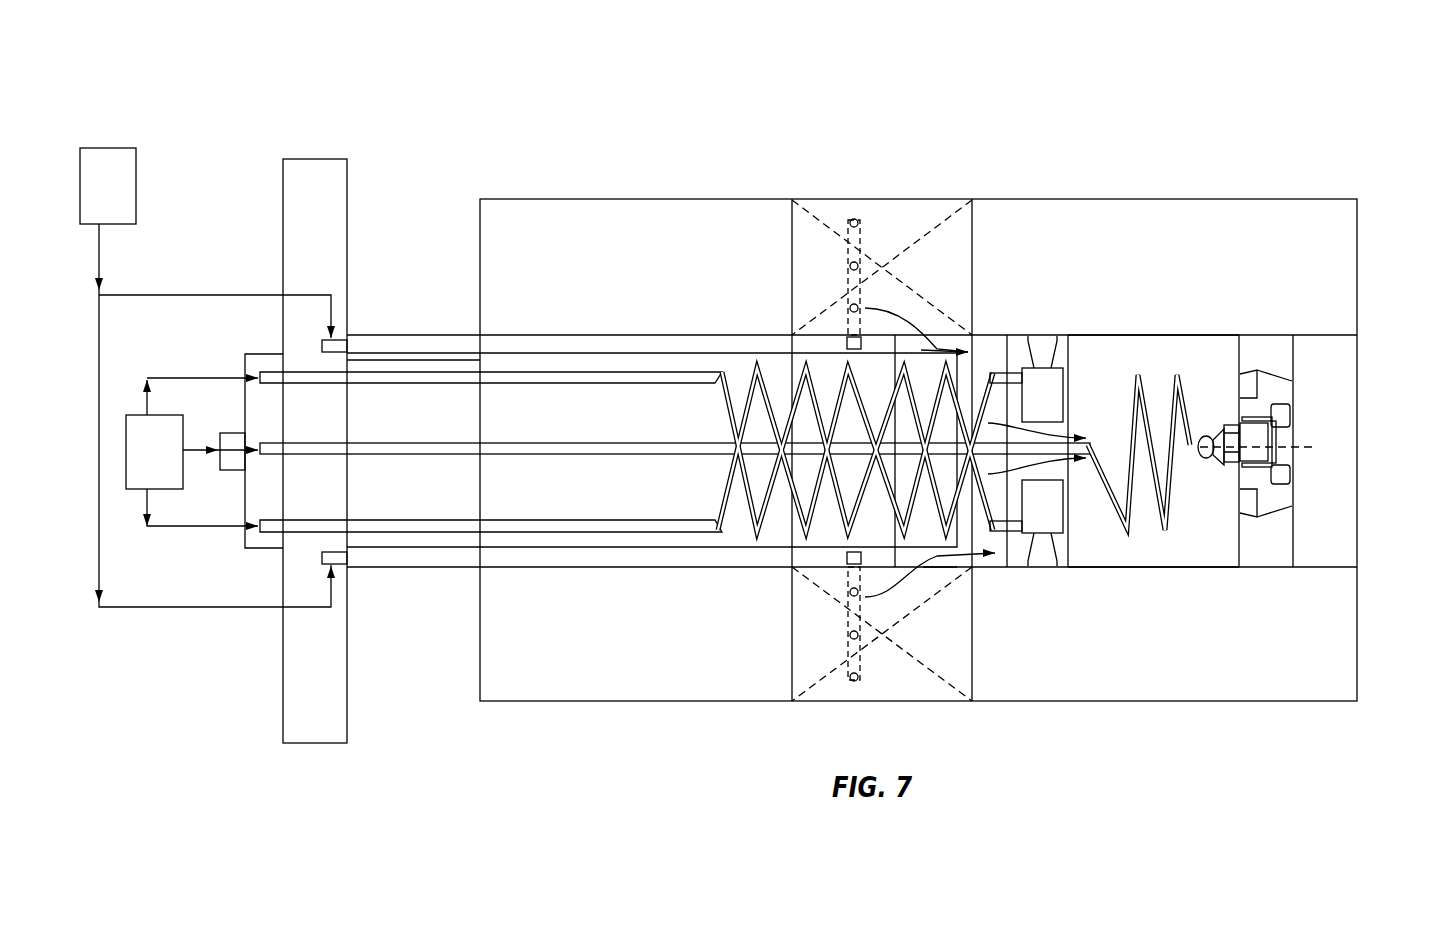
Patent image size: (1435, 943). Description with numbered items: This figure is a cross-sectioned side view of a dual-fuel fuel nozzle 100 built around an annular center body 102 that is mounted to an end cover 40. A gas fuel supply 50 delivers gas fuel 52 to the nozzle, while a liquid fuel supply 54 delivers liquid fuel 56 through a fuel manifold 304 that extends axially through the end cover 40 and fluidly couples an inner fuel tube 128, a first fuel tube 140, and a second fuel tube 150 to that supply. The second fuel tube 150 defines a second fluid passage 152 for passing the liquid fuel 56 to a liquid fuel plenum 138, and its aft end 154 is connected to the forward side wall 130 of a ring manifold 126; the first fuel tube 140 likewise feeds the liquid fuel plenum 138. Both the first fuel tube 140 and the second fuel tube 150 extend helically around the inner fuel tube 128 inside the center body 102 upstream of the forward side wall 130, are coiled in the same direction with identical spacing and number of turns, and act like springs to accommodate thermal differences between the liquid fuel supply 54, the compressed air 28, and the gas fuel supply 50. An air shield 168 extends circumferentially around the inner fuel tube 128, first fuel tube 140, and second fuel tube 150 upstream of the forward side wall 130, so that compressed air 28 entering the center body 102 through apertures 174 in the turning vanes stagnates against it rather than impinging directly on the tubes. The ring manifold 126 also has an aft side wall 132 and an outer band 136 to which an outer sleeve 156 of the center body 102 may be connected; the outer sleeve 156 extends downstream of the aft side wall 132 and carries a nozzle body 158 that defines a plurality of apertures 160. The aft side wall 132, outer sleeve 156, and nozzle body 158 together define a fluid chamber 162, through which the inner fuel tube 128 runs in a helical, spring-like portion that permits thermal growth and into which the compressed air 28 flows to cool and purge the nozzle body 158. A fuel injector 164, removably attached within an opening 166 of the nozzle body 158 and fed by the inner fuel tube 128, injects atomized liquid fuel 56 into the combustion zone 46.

The compressed air 28 is at (879, 307).
The end cover 40 is at (328, 730).
The combustion zone 46 is at (1401, 448).
The gas fuel supply 50 is at (122, 200).
The gas fuel 52 is at (99, 246).
The liquid fuel supply 54 is at (165, 470).
The liquid fuel 56 is at (165, 378).
The dual-fuel fuel nozzle 100 is at (1168, 90).
The center body 102 is at (561, 316).
The ring manifold 126 is at (1068, 350).
The inner fuel tube 128 is at (630, 455).
The forward side wall 130 is at (988, 366).
The aft side wall 132 is at (1070, 396).
The outer band 136 is at (1037, 568).
The liquid fuel plenum 138 is at (1056, 407).
The first fuel tube 140 is at (563, 520).
The second fuel tube 150 is at (549, 386).
The second fluid passage 152 is at (655, 376).
The aft end 154 is at (1003, 402).
The outer sleeve 156 is at (1158, 343).
The nozzle body 158 is at (1268, 352).
The apertures 160 is at (1239, 568).
The fluid chamber 162 is at (1219, 508).
The fuel injector 164 is at (1238, 425).
The opening 166 is at (1283, 404).
The air shield 168 is at (920, 350).
The apertures 174 is at (923, 568).
The fuel manifold 304 is at (258, 493).